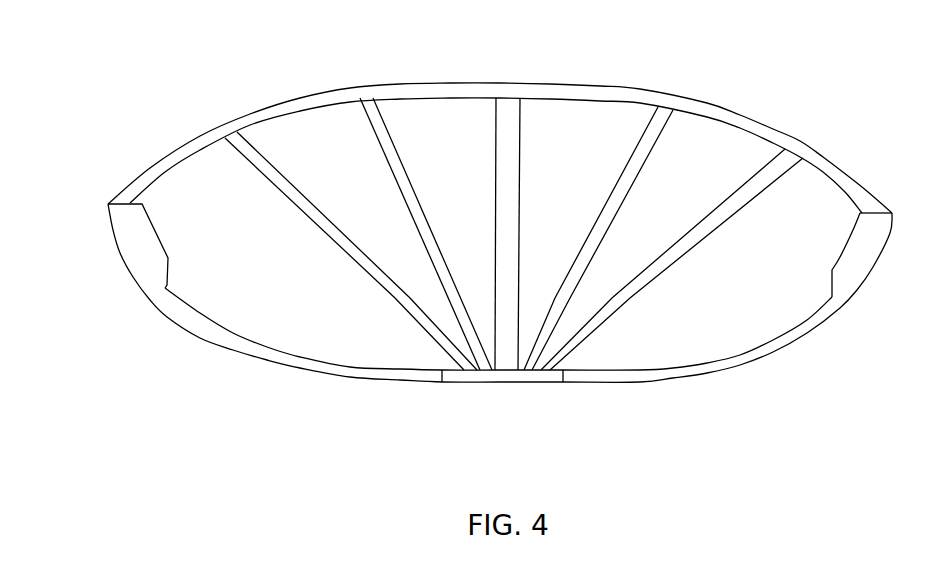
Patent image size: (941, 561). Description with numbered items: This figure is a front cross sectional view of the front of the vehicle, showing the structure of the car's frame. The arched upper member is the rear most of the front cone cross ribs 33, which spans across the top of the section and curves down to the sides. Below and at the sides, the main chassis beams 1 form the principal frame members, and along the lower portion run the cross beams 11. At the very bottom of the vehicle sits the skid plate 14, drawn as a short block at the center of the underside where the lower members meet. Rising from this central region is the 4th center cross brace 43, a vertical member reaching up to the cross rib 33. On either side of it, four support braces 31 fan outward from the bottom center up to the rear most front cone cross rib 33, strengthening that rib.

The main chassis beam 1 is at (940, 253).
The cross beam 11 is at (292, 358).
The skid plate 14 is at (505, 377).
The support brace 31 is at (245, 150).
The rear most front cone cross rib 33 is at (313, 98).
The 4th center cross brace 43 is at (512, 120).